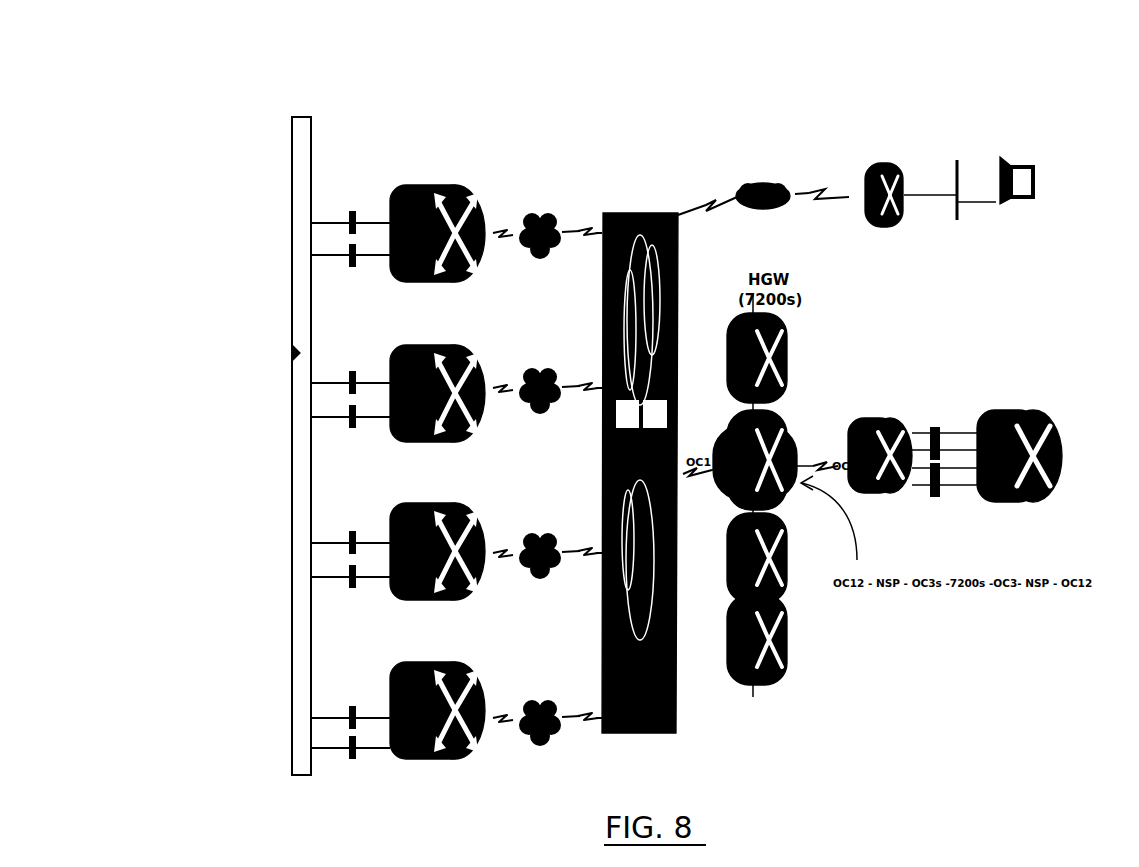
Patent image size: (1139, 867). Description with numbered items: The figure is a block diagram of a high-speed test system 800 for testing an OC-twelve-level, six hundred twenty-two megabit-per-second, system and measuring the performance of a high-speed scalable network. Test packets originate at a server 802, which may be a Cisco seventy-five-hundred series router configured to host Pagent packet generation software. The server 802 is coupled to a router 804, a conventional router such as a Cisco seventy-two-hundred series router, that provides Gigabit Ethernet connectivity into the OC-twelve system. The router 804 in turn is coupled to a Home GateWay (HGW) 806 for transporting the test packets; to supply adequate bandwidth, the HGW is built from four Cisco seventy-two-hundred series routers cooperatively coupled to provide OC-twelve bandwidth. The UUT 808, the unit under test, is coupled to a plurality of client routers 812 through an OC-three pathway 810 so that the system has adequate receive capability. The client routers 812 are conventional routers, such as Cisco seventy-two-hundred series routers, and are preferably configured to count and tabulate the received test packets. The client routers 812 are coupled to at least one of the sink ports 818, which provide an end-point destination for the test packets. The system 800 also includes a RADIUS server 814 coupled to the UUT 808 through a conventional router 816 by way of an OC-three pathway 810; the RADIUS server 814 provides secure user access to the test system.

The high-speed test system 800 is at (340, 62).
The server 802 is at (1062, 478).
The router 804 is at (847, 405).
The Home GateWay (HGW) 806 is at (628, 160).
The UUT 808 is at (532, 270).
The OC-3 pathway 810 is at (765, 170).
The client routers 812 is at (427, 293).
The RADIUS server 814 is at (1035, 117).
The conventional router 816 is at (890, 135).
The sink ports 818 is at (292, 712).